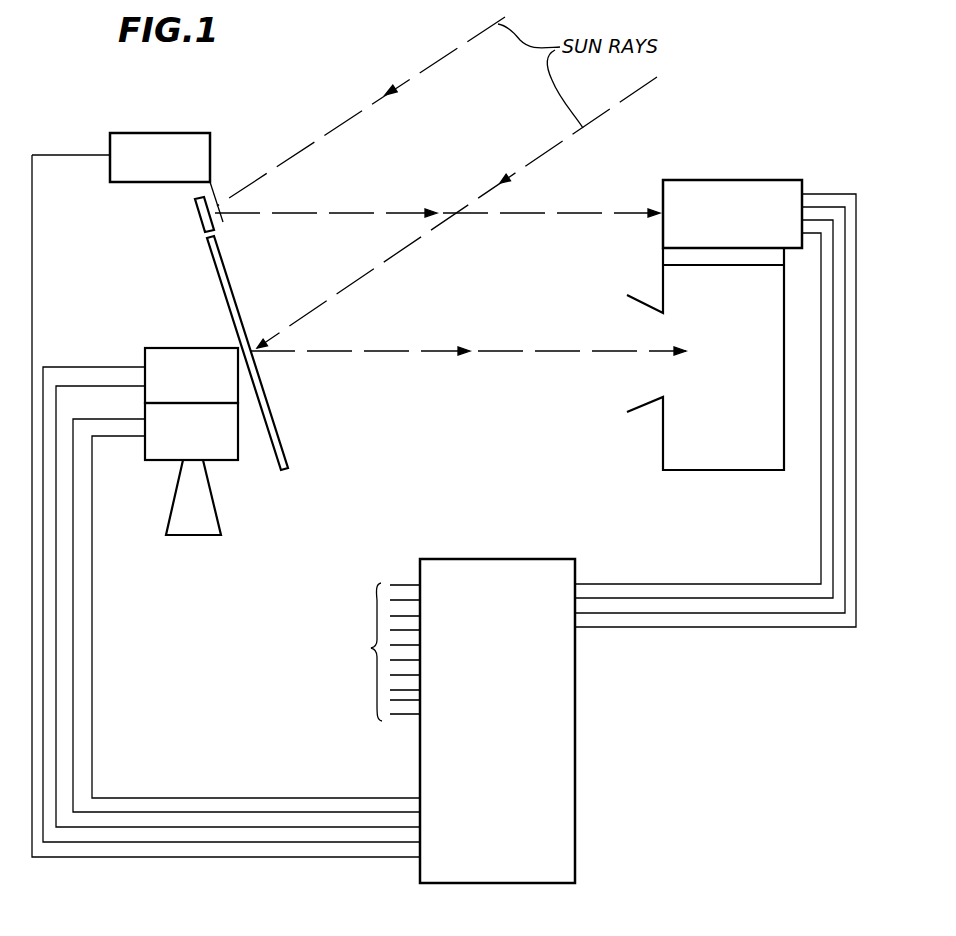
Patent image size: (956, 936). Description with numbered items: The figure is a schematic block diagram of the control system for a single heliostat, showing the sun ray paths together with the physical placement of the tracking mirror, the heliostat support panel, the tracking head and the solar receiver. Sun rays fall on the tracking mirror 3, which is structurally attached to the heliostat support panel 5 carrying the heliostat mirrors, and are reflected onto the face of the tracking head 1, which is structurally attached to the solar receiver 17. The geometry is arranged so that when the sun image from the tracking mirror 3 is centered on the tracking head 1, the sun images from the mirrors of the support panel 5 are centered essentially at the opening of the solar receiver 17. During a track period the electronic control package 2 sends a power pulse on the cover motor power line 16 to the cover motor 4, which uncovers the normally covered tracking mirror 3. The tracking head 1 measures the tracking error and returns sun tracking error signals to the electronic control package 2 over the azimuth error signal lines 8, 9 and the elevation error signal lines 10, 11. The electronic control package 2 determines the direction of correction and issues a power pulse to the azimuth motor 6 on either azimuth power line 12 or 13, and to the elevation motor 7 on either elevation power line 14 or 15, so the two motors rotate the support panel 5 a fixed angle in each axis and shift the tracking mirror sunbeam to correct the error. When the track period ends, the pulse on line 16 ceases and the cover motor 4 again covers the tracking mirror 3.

The tracking head 1 is at (769, 180).
The electronic control package 2 is at (578, 769).
The tracking mirror 3 is at (197, 214).
The cover motor 4 is at (190, 131).
The heliostat support panel with mirrors 5 is at (237, 299).
The azimuth motor 6 is at (150, 463).
The elevation motor 7 is at (164, 348).
The azimuth sun tracking error signal line 8 is at (687, 584).
The azimuth sun tracking error signal line 9 is at (715, 598).
The elevation sun tracking error signal line 10 is at (743, 613).
The elevation sun tracking error signal line 11 is at (778, 627).
The azimuth power line 12 is at (93, 595).
The azimuth power line 13 is at (74, 629).
The elevation power line 14 is at (57, 660).
The elevation power line 15 is at (44, 689).
The cover motor power line 16 is at (213, 859).
The solar receiver 17 is at (702, 369).